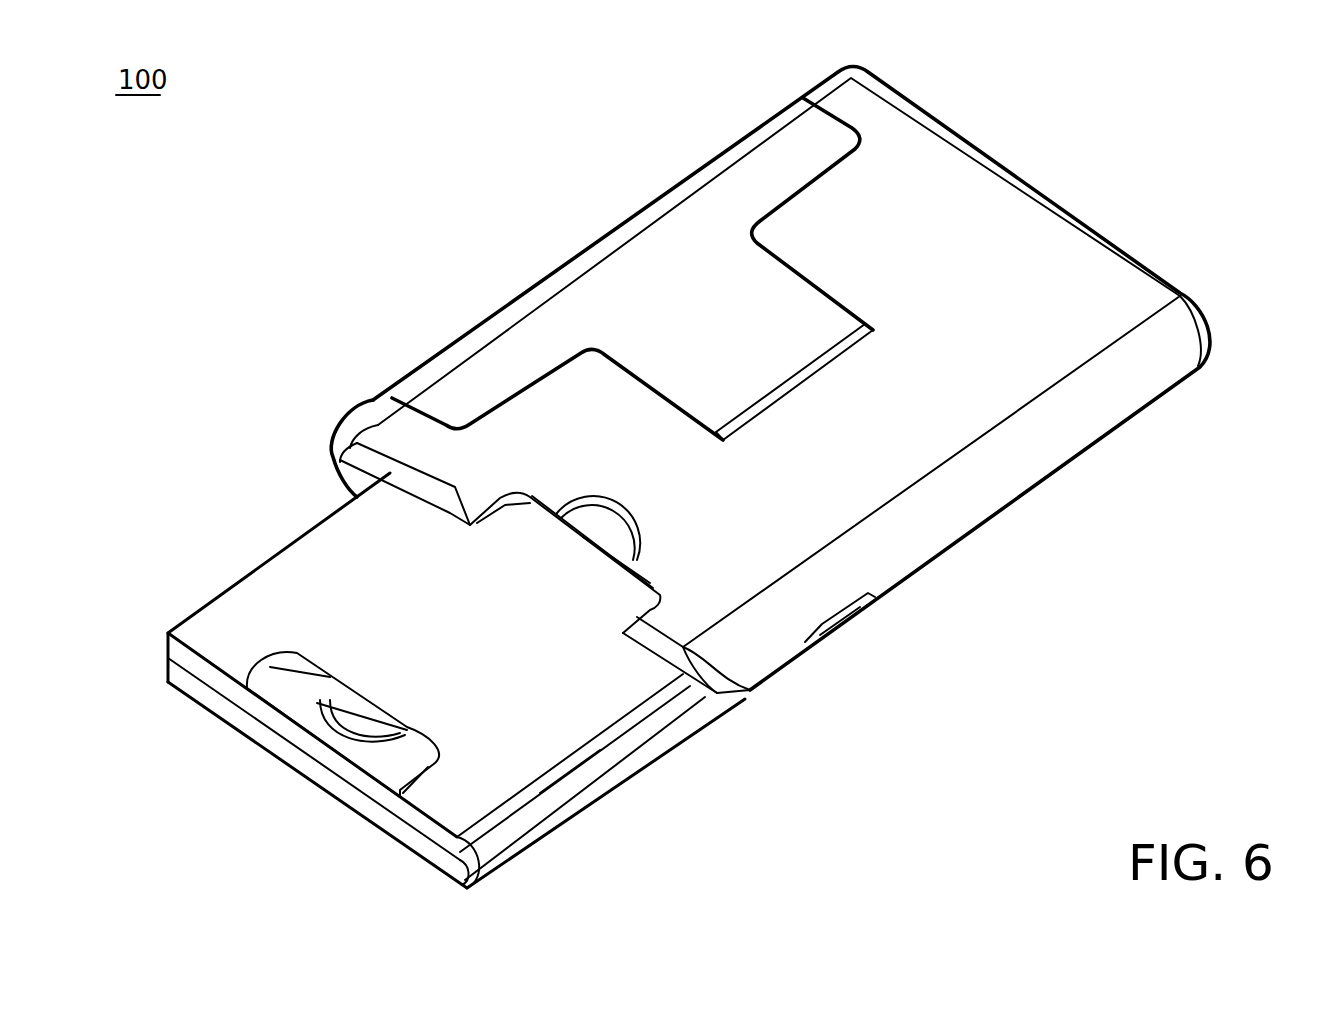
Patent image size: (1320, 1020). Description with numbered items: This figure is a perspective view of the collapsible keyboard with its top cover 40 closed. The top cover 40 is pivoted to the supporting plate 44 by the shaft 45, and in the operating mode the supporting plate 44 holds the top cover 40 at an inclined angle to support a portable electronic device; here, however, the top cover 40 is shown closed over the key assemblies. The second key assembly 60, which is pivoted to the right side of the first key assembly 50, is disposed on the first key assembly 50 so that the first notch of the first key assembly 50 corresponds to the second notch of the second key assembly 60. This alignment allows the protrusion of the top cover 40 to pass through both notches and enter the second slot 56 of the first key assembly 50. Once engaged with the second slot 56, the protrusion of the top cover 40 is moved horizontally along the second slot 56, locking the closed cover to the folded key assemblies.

The top cover 40 is at (982, 227).
The supporting plate 44 is at (690, 257).
The shaft 45 is at (787, 380).
The first key assembly 50 is at (265, 742).
The second slot 56 is at (580, 797).
The second key assembly 60 is at (190, 657).